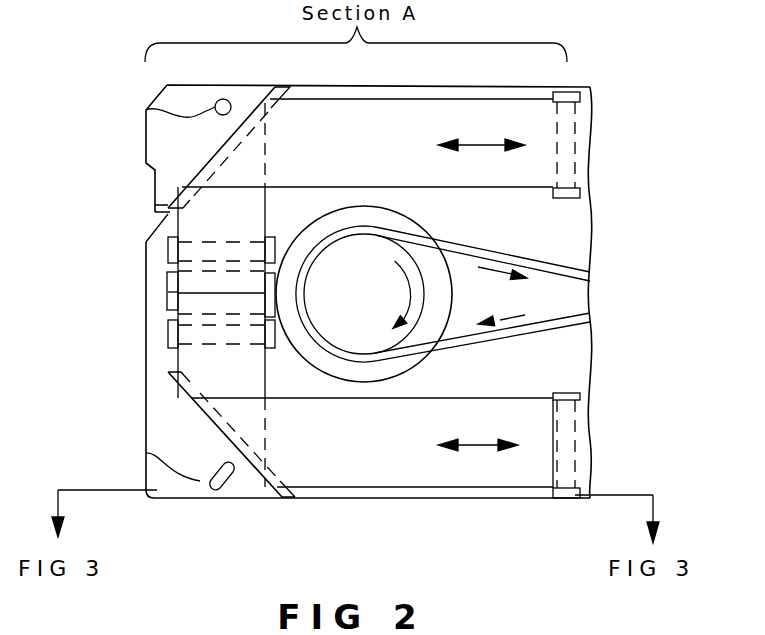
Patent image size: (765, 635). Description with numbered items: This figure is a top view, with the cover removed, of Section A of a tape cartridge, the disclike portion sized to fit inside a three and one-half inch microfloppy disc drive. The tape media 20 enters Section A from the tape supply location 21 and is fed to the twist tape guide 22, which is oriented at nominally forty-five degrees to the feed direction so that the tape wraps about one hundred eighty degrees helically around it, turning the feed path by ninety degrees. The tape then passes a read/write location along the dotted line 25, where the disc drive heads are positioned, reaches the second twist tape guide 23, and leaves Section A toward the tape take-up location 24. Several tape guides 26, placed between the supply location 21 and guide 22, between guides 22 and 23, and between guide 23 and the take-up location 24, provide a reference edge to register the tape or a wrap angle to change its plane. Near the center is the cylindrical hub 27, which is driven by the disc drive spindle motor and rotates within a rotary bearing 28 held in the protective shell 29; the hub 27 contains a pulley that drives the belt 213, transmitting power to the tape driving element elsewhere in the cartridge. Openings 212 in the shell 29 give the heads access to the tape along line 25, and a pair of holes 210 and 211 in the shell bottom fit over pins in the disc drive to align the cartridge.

The tape media 20 is at (417, 459).
The tape supply location 21 is at (607, 444).
The twist tape guide 22 is at (168, 383).
The twist tape guide 23 is at (155, 210).
The tape take-up location 24 is at (548, 151).
The dotted line 25 is at (167, 312).
The tape guide 26 is at (168, 253).
The cylindrical hub 27 is at (373, 340).
The rotary bearing 28 is at (417, 362).
The protective shell 29 is at (186, 447).
The hole 210 is at (146, 110).
The hole 211 is at (146, 453).
The openings 212 is at (168, 292).
The belt 213 is at (466, 245).